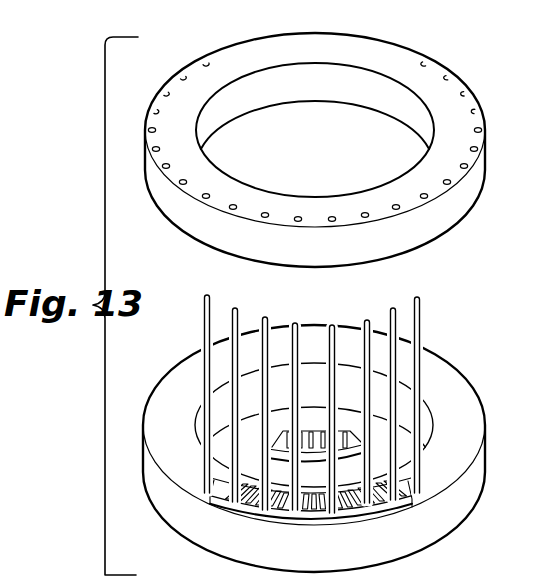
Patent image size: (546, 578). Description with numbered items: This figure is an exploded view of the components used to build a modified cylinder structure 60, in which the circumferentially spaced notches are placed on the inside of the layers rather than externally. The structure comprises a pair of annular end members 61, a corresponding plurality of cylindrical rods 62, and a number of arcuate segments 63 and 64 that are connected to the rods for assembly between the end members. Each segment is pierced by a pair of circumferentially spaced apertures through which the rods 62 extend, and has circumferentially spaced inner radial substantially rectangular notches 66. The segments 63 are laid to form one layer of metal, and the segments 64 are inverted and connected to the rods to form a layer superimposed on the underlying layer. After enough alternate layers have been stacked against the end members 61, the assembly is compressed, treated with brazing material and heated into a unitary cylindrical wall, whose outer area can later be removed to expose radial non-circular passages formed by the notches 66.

The structure 60 is at (148, 255).
The annular end member 61 is at (161, 90).
The cylindrical rod 62 is at (393, 309).
The arcuate segment 63 is at (311, 432).
The arcuate segment 64 is at (318, 511).
The inner radial substantially rectangular notch 66 is at (249, 488).